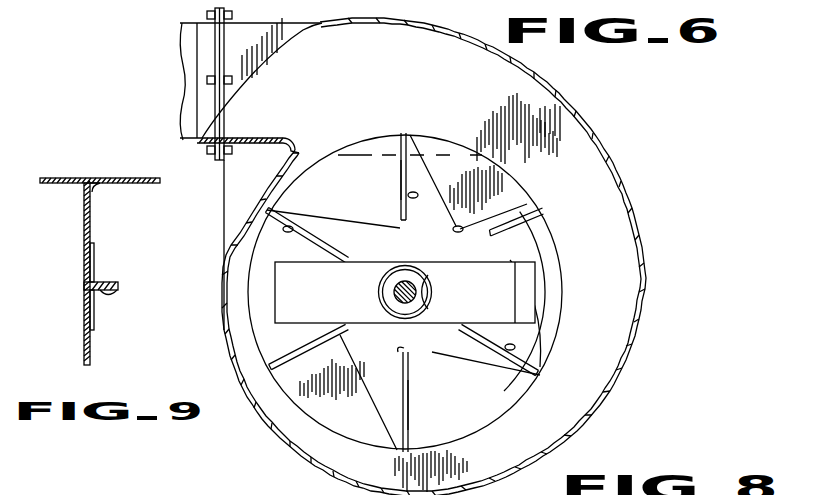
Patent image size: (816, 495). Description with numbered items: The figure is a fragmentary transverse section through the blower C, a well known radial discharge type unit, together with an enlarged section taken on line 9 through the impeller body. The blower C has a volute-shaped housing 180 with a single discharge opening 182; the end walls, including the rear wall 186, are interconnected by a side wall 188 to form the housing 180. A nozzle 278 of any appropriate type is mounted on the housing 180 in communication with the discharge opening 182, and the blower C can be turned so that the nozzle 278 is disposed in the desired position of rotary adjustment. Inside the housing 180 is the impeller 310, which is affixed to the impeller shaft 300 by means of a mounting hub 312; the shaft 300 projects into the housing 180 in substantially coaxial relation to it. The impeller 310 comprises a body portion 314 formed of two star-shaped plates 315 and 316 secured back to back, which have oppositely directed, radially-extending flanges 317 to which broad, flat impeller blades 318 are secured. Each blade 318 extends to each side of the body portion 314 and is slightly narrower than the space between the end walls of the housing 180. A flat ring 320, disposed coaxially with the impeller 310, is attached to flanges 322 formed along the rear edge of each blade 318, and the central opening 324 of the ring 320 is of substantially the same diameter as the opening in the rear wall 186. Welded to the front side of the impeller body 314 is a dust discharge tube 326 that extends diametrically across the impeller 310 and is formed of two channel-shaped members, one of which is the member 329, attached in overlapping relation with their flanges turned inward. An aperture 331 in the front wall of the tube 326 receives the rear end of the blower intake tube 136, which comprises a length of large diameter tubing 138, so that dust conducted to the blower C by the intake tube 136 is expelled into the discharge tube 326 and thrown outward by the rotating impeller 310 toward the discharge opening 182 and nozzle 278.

In FIG. 6, the nozzle 278 is at (172, 65).
In FIG. 6, the discharge opening 182 is at (222, 135).
In FIG. 6, the blower housing 180 is at (456, 256).
In FIG. 6, the side wall 188 is at (640, 256).
In FIG. 6, the rear wall 186 is at (415, 76).
In FIG. 6, the section line 9— 9 is at (355, 150).
In FIG. 6, the blower C is at (626, 157).
In FIG. 6, the flat ring 320 is at (621, 308).
In FIG. 9, the flat ring 320 is at (105, 178).
In FIG. 6, the body portion 314 is at (532, 352).
In FIG. 6, the impeller 310 is at (565, 370).
In FIG. 6, the central opening 324 is at (527, 204).
In FIG. 6, the dust discharge tube 326 is at (542, 263).
In FIG. 6, the star-shaped plate 316 is at (413, 153).
In FIG. 9, the star-shaped plate 316 is at (108, 292).
In FIG. 6, the impeller blade 318 is at (288, 228).
In FIG. 9, the impeller blade 318 is at (90, 221).
In FIG. 6, the radially-extending flange 317 is at (373, 200).
In FIG. 9, the radially-extending flange 317 is at (94, 249).
In FIG. 6, the mounting hub 312 is at (388, 286).
In FIG. 6, the large diameter tubing 138 is at (432, 309).
In FIG. 6, the channel-shaped member 329 is at (535, 282).
In FIG. 6, the aperture 331 is at (433, 279).
In FIG. 6, the impeller shaft 300 is at (398, 292).
In FIG. 6, the blower intake tube 136 is at (422, 292).
In FIG. 9, the flange 322 is at (97, 187).
In FIG. 9, the star-shaped plate 315 is at (108, 284).